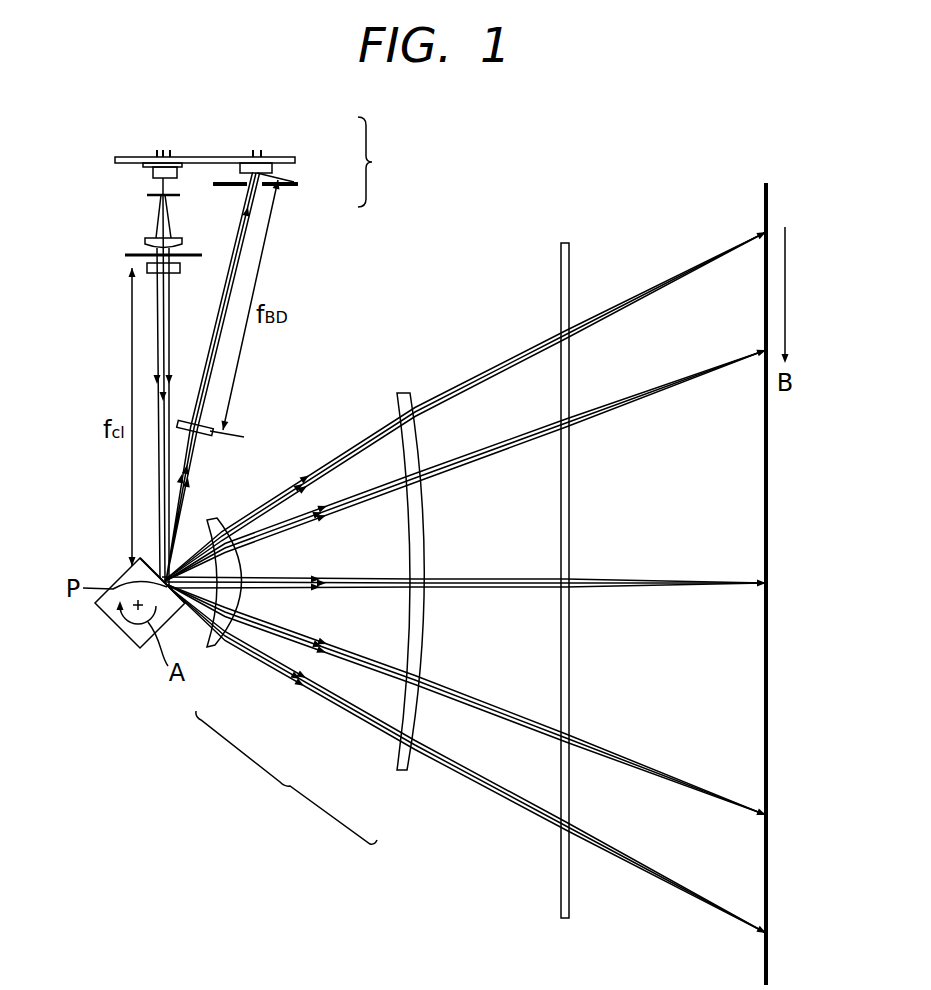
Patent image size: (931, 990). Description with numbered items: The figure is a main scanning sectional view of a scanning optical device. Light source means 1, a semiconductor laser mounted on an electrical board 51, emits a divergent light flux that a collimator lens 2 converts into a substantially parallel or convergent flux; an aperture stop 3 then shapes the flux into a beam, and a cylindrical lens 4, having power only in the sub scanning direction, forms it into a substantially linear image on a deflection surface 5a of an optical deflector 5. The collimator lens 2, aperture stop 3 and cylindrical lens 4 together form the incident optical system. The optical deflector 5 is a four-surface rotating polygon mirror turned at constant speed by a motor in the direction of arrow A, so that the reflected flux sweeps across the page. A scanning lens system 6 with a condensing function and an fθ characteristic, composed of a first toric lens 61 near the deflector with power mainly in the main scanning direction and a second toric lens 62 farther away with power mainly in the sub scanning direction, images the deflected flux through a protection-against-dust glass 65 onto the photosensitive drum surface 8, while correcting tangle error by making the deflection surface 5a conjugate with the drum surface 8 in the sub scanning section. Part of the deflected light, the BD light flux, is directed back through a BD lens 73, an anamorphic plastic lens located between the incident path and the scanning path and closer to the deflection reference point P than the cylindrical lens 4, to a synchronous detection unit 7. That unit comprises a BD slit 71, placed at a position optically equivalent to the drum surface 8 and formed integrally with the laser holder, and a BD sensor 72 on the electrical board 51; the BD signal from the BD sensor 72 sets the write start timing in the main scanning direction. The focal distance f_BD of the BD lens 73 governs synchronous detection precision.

The light source means 1 is at (148, 157).
The electrical board 51 is at (203, 157).
The condenser lens (collimator lens) 2 is at (143, 237).
The aperture stop 3 is at (128, 255).
The cylindrical lens 4 is at (148, 272).
The optical deflector 5 is at (135, 599).
The deflection surface 5a is at (137, 557).
The scanning lens system 6 is at (310, 618).
The first toric lens 61 is at (210, 647).
The second toric lens 62 is at (400, 772).
The protection-against-dust glass 65 is at (569, 909).
The synchronous detection unit 7 is at (301, 164).
The synchronous detection slit (BD slit) 71 is at (290, 185).
The synchronous detection element (BD sensor) 72 is at (282, 163).
The synchronous detection optical element (BD lens) 73 is at (204, 434).
The photosensitive drum surface 8 is at (769, 955).